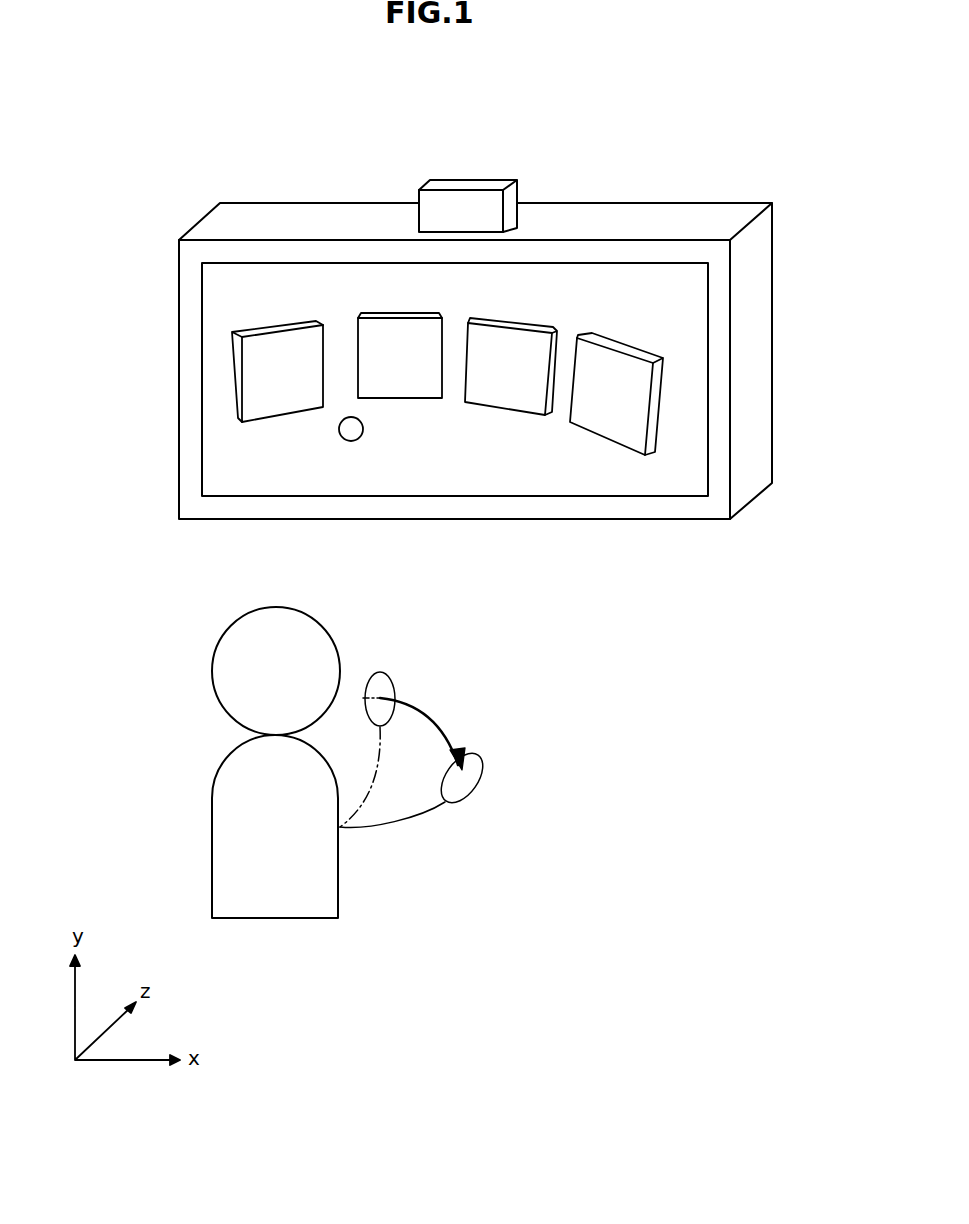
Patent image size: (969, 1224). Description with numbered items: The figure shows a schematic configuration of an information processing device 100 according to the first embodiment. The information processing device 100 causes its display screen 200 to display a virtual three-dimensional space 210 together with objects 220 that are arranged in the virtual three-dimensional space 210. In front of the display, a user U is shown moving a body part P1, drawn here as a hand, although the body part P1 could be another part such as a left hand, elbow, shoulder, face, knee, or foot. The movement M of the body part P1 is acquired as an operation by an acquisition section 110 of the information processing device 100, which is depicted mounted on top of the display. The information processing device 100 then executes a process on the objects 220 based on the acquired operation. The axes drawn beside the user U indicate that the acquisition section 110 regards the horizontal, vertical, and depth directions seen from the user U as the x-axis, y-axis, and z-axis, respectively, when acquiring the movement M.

The information processing device 100 is at (640, 142).
The acquisition section 110 is at (477, 178).
The display screen 200 is at (620, 495).
The virtual three-dimensional space 210 is at (528, 467).
The objects 220 is at (442, 413).
The user U is at (173, 672).
The body part P1 is at (380, 672).
The movement M is at (438, 717).